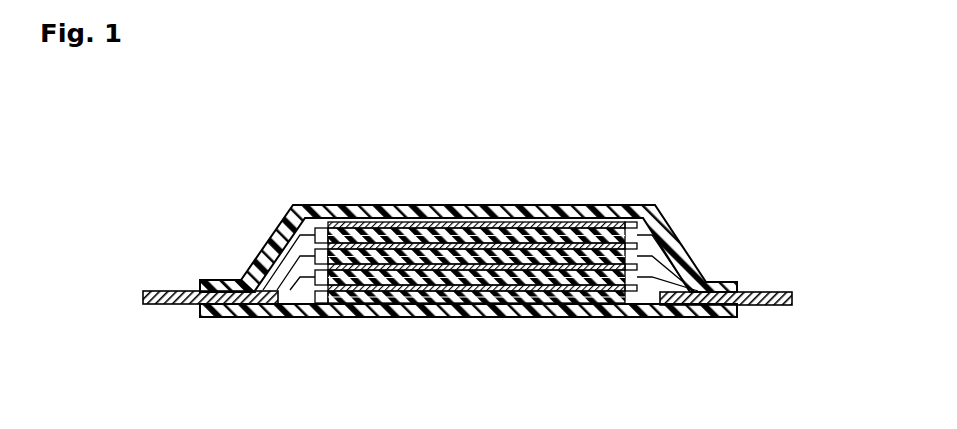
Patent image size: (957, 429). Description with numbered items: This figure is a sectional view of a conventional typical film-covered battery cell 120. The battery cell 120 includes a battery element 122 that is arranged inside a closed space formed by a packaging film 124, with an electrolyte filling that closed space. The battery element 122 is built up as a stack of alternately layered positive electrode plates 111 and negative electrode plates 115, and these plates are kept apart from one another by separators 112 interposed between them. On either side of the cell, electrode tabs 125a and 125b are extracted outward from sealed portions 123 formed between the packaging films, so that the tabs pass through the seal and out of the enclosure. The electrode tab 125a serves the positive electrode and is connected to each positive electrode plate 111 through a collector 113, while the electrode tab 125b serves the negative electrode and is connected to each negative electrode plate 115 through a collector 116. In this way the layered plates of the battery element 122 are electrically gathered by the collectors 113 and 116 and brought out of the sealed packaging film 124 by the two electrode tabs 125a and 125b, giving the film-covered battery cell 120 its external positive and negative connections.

The positive electrode plate 111 is at (470, 205).
The separator 112 is at (320, 235).
The collector 113 is at (278, 262).
The negative electrode plate 115 is at (370, 222).
The collector 116 is at (675, 265).
The battery cell 120 is at (480, 248).
The battery element 122 is at (295, 315).
The sealed portion 123 is at (233, 288).
The packaging film 124 is at (530, 212).
The electrode tab 125a is at (168, 291).
The electrode tab 125b is at (772, 293).